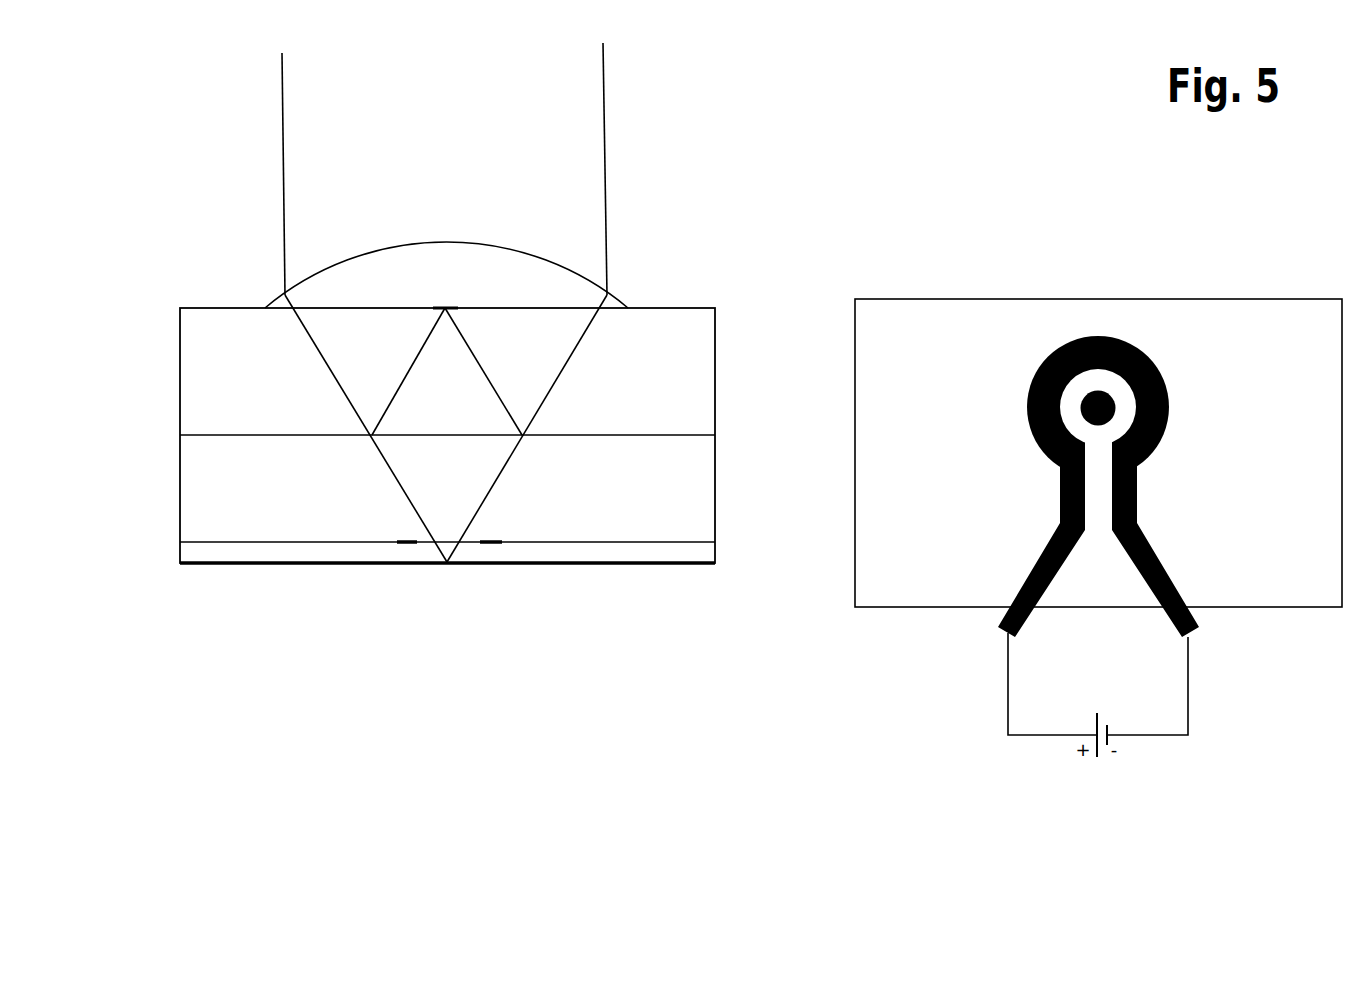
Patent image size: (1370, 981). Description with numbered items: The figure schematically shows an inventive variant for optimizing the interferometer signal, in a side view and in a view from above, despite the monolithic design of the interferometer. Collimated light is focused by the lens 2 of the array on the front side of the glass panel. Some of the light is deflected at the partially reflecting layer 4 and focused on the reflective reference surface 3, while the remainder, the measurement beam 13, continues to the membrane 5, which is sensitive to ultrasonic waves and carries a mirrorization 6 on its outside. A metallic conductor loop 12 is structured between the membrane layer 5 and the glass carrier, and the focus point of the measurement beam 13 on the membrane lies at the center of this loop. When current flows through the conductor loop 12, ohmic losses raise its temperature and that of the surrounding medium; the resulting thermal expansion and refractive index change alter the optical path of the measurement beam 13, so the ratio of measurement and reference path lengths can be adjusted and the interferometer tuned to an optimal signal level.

The lens 2 is at (359, 269).
The reference surface 3 is at (429, 312).
The partially reflecting layer 4 is at (686, 444).
The membrane 5 is at (189, 550).
The mirrorization 6 is at (232, 570).
The conductor loop 12 is at (514, 550).
The measurement beam 13 is at (1078, 382).